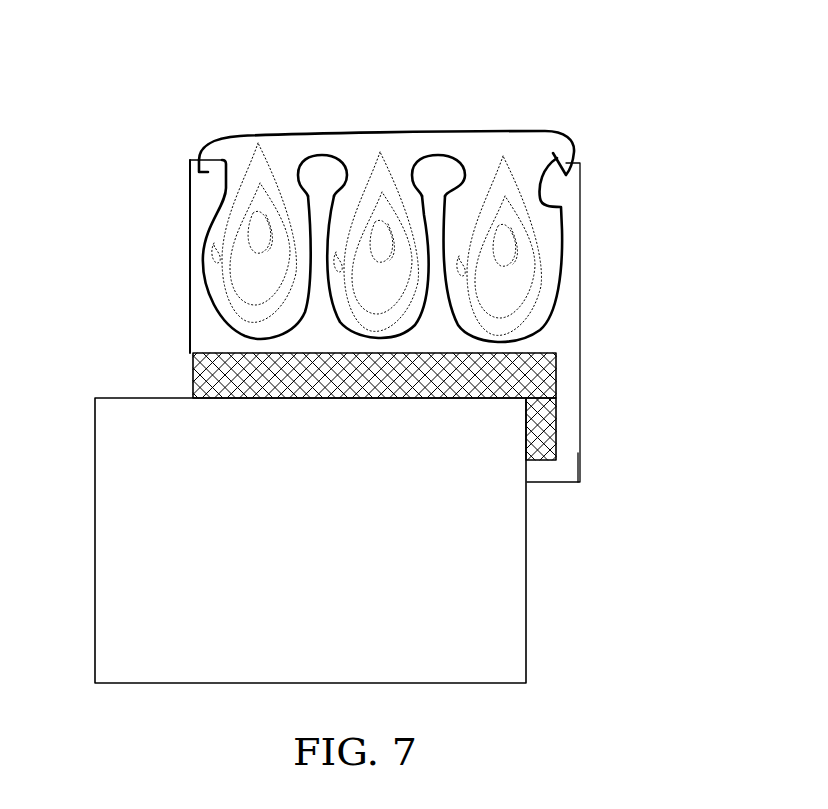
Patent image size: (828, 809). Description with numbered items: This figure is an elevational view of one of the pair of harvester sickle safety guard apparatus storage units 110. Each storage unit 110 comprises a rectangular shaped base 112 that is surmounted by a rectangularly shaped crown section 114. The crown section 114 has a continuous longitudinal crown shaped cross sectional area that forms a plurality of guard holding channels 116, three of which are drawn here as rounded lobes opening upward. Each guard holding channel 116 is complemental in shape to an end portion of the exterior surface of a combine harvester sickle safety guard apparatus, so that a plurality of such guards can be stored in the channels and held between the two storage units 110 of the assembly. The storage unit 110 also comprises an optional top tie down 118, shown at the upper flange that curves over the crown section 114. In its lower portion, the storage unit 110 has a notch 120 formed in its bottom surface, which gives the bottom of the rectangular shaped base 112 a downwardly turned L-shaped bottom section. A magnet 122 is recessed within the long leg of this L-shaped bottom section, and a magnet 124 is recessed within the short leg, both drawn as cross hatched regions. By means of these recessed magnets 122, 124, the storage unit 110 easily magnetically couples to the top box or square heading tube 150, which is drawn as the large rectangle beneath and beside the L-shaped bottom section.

The harvester sickle safety guard apparatus storage unit 110 is at (315, 179).
The rectangular shaped base 112 is at (190, 346).
The rectangularly shaped crown section 114 is at (345, 160).
The guard holding channel 116 is at (256, 338).
The top tie down 118 is at (221, 139).
The notch 120 is at (559, 352).
The magnet 122 is at (492, 370).
The magnet 124 is at (547, 442).
The top box or square heading tube 150 is at (330, 597).